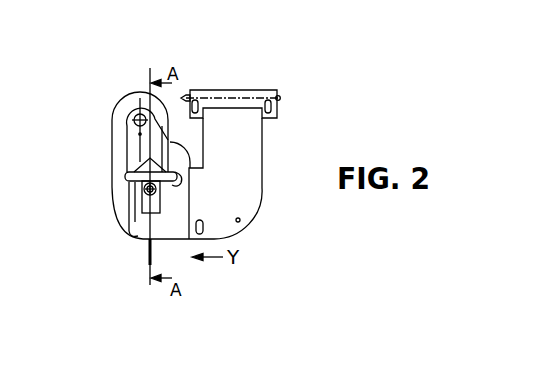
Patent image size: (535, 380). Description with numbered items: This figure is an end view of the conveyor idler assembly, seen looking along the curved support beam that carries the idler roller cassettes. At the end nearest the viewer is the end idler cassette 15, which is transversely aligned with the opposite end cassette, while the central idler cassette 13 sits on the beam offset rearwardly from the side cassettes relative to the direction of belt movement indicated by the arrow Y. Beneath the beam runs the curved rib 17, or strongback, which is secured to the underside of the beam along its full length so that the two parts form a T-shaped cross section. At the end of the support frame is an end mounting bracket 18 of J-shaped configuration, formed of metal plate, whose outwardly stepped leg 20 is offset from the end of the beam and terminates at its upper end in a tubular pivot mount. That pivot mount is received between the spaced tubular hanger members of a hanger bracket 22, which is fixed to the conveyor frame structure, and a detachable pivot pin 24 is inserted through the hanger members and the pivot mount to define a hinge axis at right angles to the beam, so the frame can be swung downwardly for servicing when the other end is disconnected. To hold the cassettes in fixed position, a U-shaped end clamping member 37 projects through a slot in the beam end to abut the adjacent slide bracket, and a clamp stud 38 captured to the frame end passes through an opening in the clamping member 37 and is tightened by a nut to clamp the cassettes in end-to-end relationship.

The central idler cassette 13 is at (175, 138).
The end idler cassette 15 is at (113, 104).
The rib 17 is at (146, 256).
The end mounting bracket 18 is at (262, 210).
The outwardly stepped leg 20 is at (250, 147).
The hanger bracket 22 is at (240, 88).
The pivot pin 24 is at (282, 98).
The end clamping member 37 is at (128, 184).
The clamp stud 38 is at (147, 191).